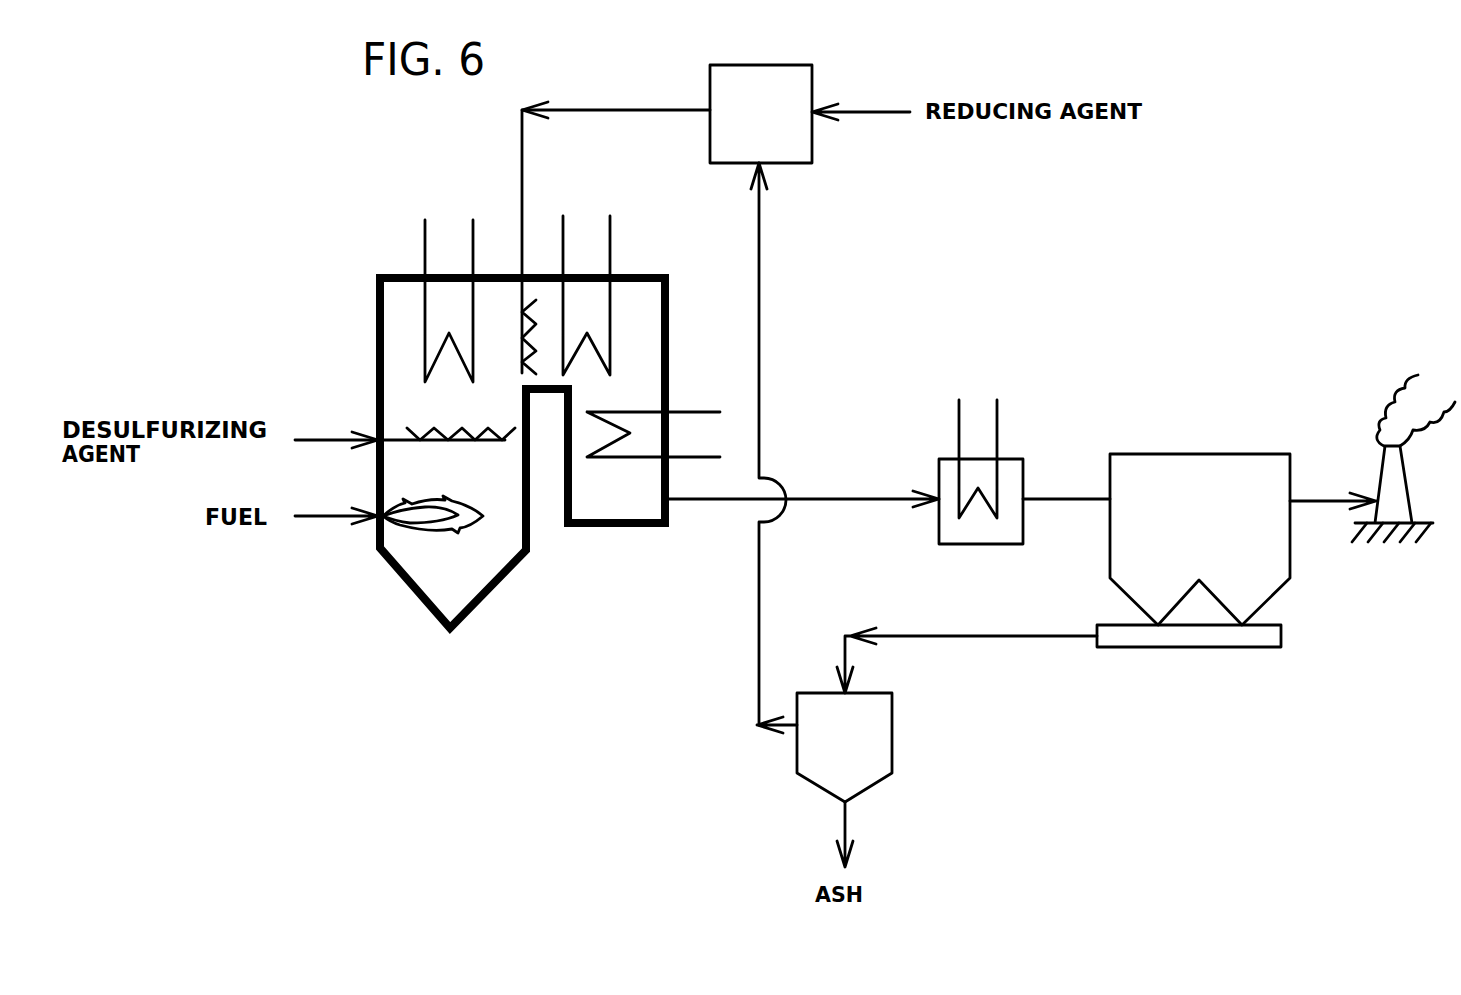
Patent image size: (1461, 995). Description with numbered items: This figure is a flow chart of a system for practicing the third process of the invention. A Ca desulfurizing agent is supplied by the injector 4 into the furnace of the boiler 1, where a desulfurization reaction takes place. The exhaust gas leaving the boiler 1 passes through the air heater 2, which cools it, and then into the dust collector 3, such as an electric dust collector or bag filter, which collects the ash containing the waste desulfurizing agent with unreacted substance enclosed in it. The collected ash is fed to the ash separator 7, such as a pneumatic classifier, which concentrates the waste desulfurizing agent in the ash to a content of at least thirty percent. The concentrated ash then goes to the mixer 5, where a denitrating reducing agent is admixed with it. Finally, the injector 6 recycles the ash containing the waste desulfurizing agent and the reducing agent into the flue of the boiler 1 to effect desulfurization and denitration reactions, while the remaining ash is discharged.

The boiler 1 is at (530, 532).
The air heater 2 is at (1023, 475).
The dust collector 3 is at (1237, 454).
The injector 4 is at (327, 440).
The mixer 5 is at (812, 152).
The injector 6 is at (522, 163).
The ash separator 7 is at (892, 732).